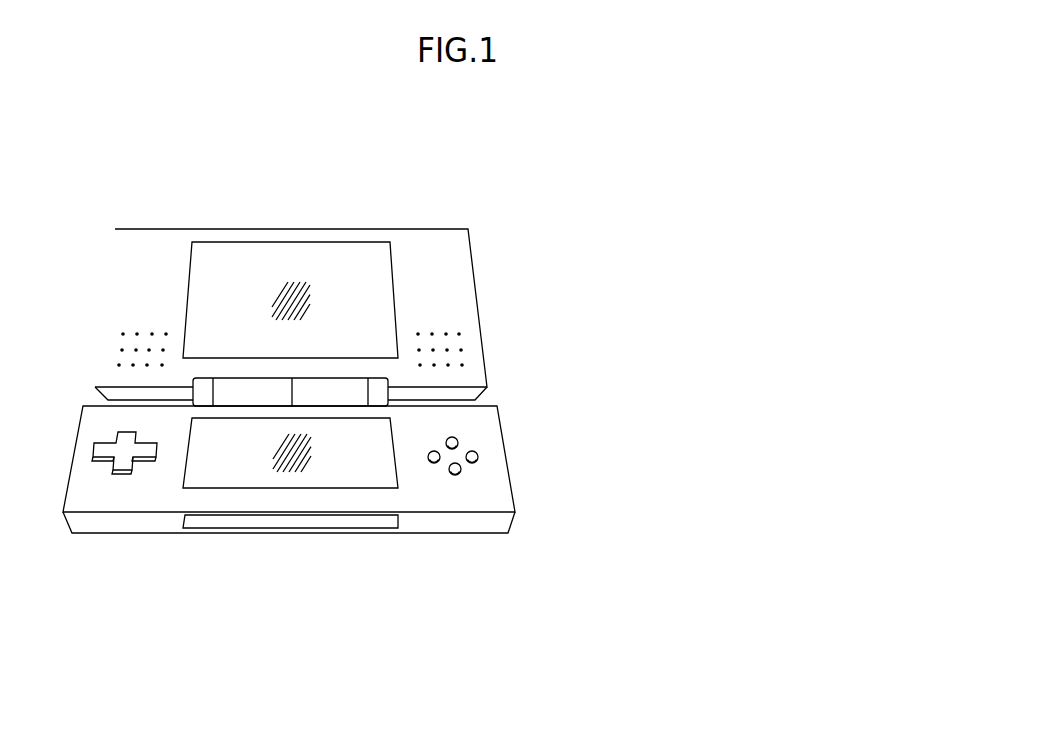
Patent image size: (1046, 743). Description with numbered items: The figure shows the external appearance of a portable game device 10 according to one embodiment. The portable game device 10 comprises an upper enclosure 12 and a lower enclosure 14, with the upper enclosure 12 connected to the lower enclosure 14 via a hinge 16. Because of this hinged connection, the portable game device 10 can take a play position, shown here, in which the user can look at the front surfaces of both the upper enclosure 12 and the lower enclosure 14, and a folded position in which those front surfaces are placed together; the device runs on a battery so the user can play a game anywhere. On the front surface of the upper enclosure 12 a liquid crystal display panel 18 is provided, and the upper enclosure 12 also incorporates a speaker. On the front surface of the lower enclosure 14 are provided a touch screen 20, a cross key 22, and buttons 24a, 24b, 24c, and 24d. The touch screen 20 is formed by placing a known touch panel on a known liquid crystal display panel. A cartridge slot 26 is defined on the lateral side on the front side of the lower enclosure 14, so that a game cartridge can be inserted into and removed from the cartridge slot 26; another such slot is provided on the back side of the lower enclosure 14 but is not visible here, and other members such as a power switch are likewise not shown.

The portable game device 10 is at (570, 326).
The upper enclosure 12 is at (477, 288).
The lower enclosure 14 is at (515, 465).
The hinge 16 is at (253, 378).
The liquid crystal display panel 18 is at (395, 272).
The touch screen 20 is at (332, 490).
The cross key 22 is at (107, 442).
The button 24a is at (455, 476).
The button 24b is at (478, 456).
The button 24c is at (434, 463).
The button 24d is at (456, 437).
The cartridge slot 26 is at (263, 530).